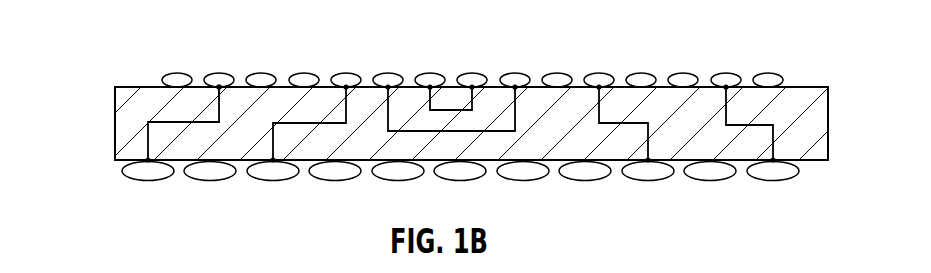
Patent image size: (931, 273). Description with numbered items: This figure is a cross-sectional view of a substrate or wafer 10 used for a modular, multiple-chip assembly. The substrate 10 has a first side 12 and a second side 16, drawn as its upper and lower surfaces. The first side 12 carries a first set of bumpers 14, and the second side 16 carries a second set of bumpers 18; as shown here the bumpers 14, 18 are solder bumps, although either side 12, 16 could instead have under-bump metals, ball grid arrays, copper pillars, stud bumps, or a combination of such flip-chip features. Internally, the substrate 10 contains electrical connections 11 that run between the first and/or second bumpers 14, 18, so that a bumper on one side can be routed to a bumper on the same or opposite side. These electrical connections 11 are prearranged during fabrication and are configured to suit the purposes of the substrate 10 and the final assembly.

The substrate 10 is at (115, 112).
The electrical connections 11 is at (143, 133).
The first side 12 is at (158, 86).
The first set of bumpers 14 is at (221, 85).
The second side 16 is at (127, 157).
The second set of bumpers 18 is at (147, 182).